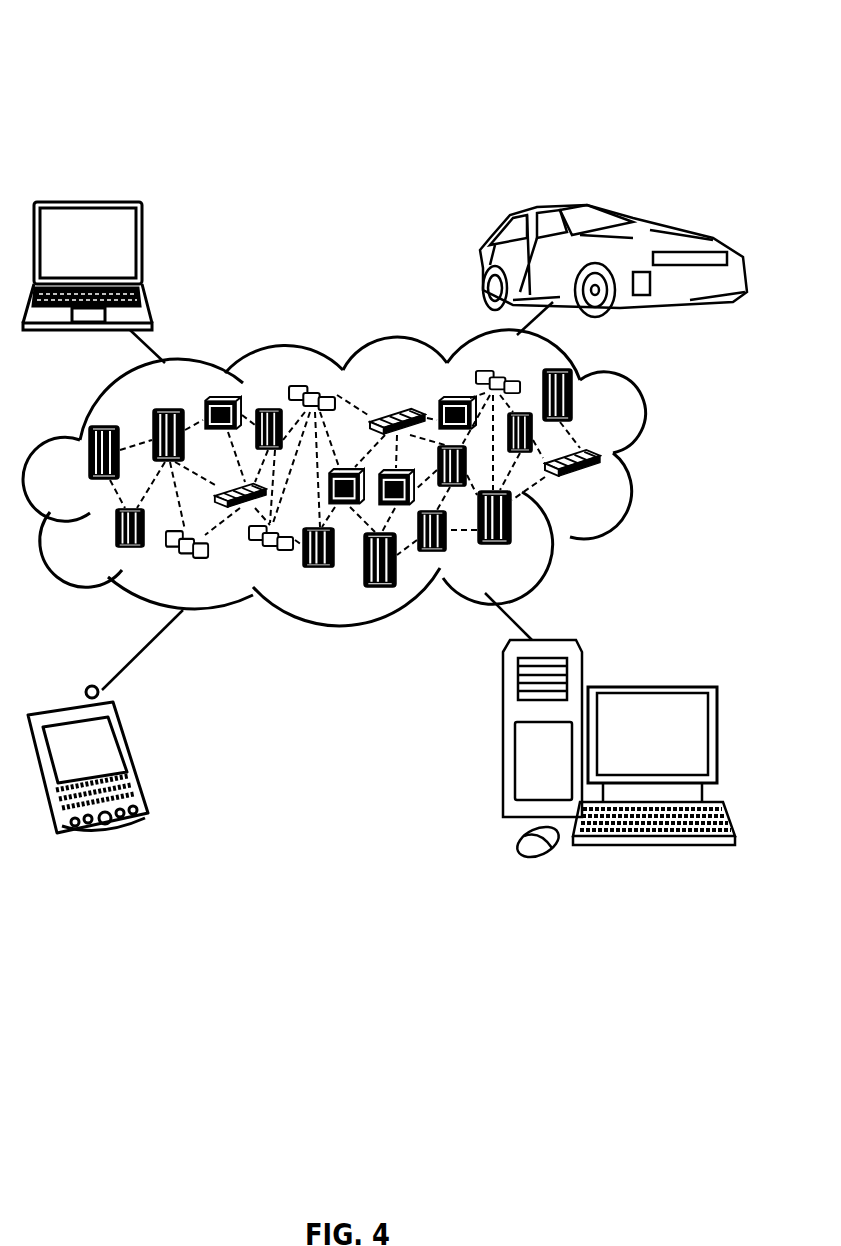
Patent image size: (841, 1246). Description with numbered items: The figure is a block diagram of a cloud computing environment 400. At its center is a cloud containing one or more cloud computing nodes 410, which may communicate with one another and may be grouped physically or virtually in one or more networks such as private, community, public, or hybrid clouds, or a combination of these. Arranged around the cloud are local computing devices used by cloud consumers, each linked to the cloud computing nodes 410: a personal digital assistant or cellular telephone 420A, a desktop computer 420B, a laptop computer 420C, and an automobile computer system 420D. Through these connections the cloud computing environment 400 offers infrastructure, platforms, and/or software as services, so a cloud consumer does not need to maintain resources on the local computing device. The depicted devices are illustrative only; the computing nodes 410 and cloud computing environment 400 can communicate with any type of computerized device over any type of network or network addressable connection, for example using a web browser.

The cloud computing environment 400 is at (270, 62).
The cloud computing nodes 410 is at (602, 483).
The personal digital assistant (PDA) or cellular telephone 420A is at (135, 755).
The desktop computer 420B is at (650, 683).
The laptop computer 420C is at (143, 250).
The automobile computer system 420D is at (480, 262).